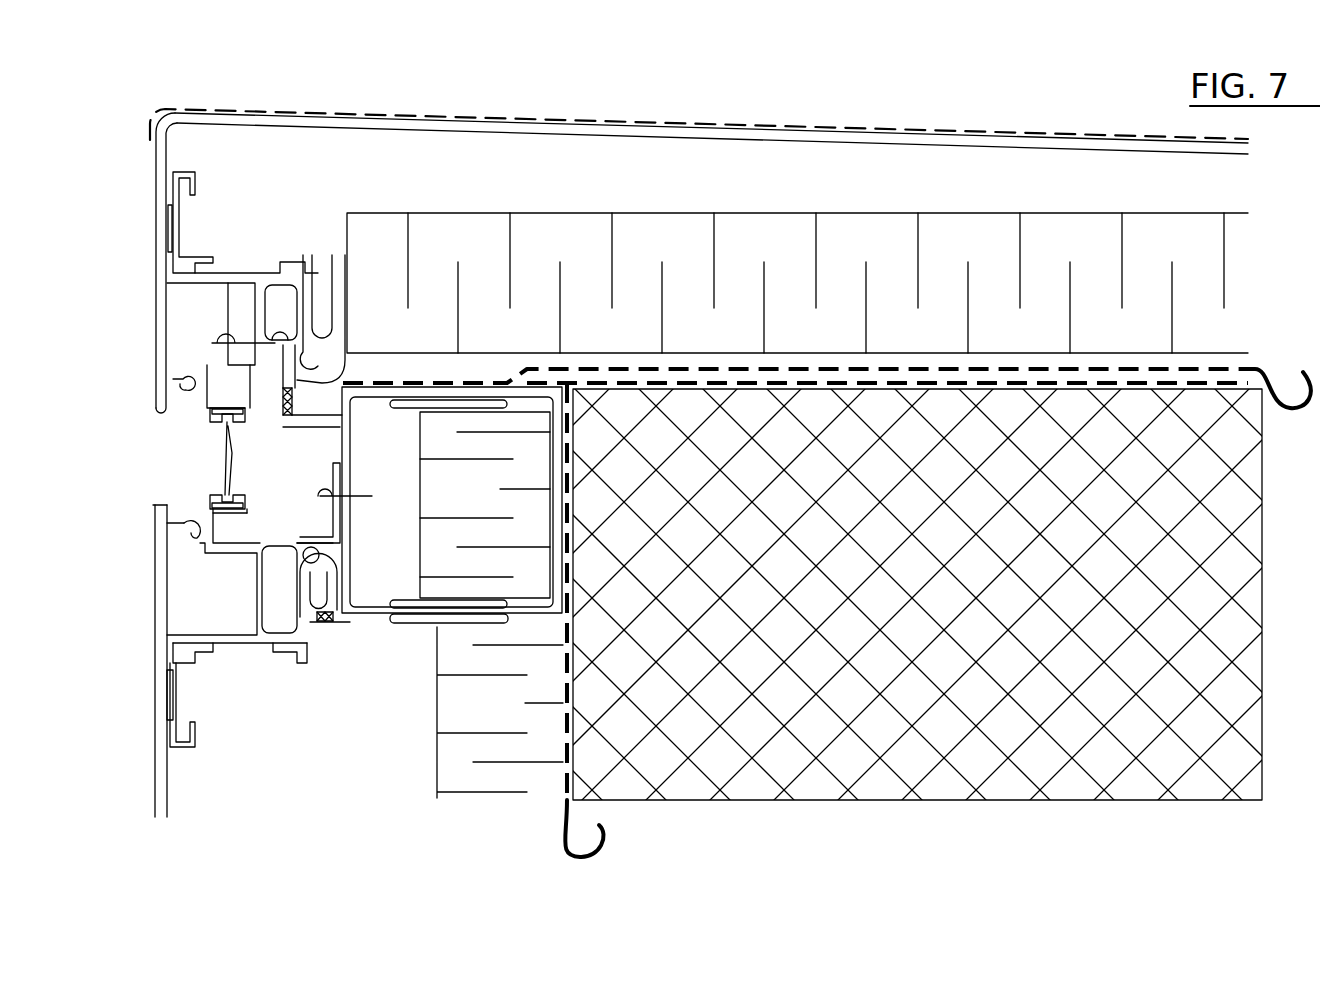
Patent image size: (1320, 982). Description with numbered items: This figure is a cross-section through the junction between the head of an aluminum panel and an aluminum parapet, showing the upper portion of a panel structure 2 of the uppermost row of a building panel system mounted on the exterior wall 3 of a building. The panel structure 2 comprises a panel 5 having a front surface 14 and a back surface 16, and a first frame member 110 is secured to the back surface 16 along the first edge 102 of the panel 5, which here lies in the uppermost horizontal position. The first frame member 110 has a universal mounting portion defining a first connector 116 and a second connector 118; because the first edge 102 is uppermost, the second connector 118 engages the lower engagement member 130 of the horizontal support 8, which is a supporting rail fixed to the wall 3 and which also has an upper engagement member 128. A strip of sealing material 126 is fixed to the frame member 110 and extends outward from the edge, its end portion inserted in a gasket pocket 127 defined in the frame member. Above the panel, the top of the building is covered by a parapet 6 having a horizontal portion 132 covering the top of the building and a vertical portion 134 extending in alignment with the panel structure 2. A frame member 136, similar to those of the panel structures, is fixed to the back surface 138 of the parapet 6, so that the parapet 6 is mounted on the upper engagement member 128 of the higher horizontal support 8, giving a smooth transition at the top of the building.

The panel structure 2 is at (124, 686).
The exterior wall 3 is at (1256, 612).
The panel 5 is at (150, 797).
The parapet 6 is at (343, 107).
The horizontal support 8 is at (353, 480).
The front surface 14 is at (156, 738).
The back surface 16 is at (167, 773).
The first edge 102 is at (160, 498).
The first frame member 110 is at (234, 672).
The first connector 116 is at (278, 289).
The second connector 118 is at (313, 334).
The strip of sealing material 126 is at (225, 480).
The gasket pocket 127 is at (243, 505).
The upper engagement member 128 is at (340, 386).
The lower engagement member 130 is at (328, 621).
The horizontal portion 132 is at (676, 118).
The vertical portion 134 is at (156, 188).
The frame member 136 is at (234, 256).
The back surface 138 is at (167, 328).